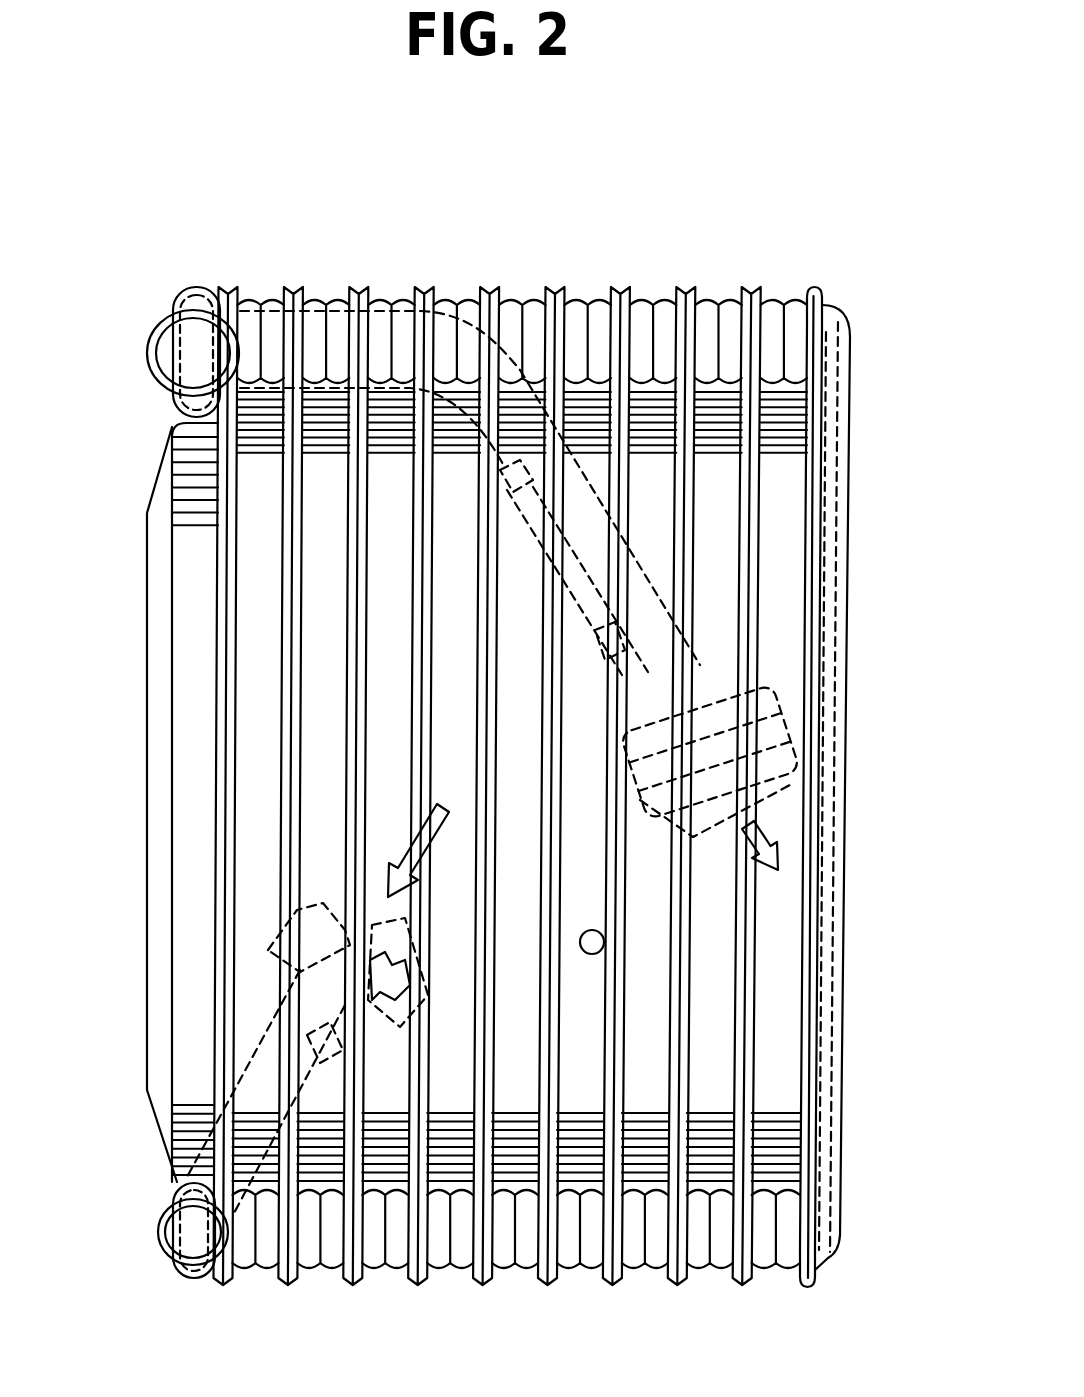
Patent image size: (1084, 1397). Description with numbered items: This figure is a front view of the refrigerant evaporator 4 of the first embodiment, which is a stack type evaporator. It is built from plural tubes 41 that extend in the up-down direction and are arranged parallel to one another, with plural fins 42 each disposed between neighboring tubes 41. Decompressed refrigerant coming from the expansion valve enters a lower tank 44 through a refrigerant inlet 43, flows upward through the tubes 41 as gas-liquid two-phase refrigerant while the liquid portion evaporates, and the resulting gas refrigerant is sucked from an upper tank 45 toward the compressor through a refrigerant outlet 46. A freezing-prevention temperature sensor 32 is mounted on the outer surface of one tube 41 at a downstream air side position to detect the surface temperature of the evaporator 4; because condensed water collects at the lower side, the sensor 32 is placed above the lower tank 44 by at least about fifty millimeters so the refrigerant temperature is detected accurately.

The refrigerant evaporator 4 is at (765, 268).
The freezing-prevention temperature sensor 32 is at (600, 953).
The tubes 41 is at (752, 907).
The fins 42 is at (710, 1165).
The refrigerant inlet 43 is at (262, 896).
The lower tank 44 is at (398, 1250).
The upper tank 45 is at (512, 303).
The refrigerant outlet 46 is at (795, 797).